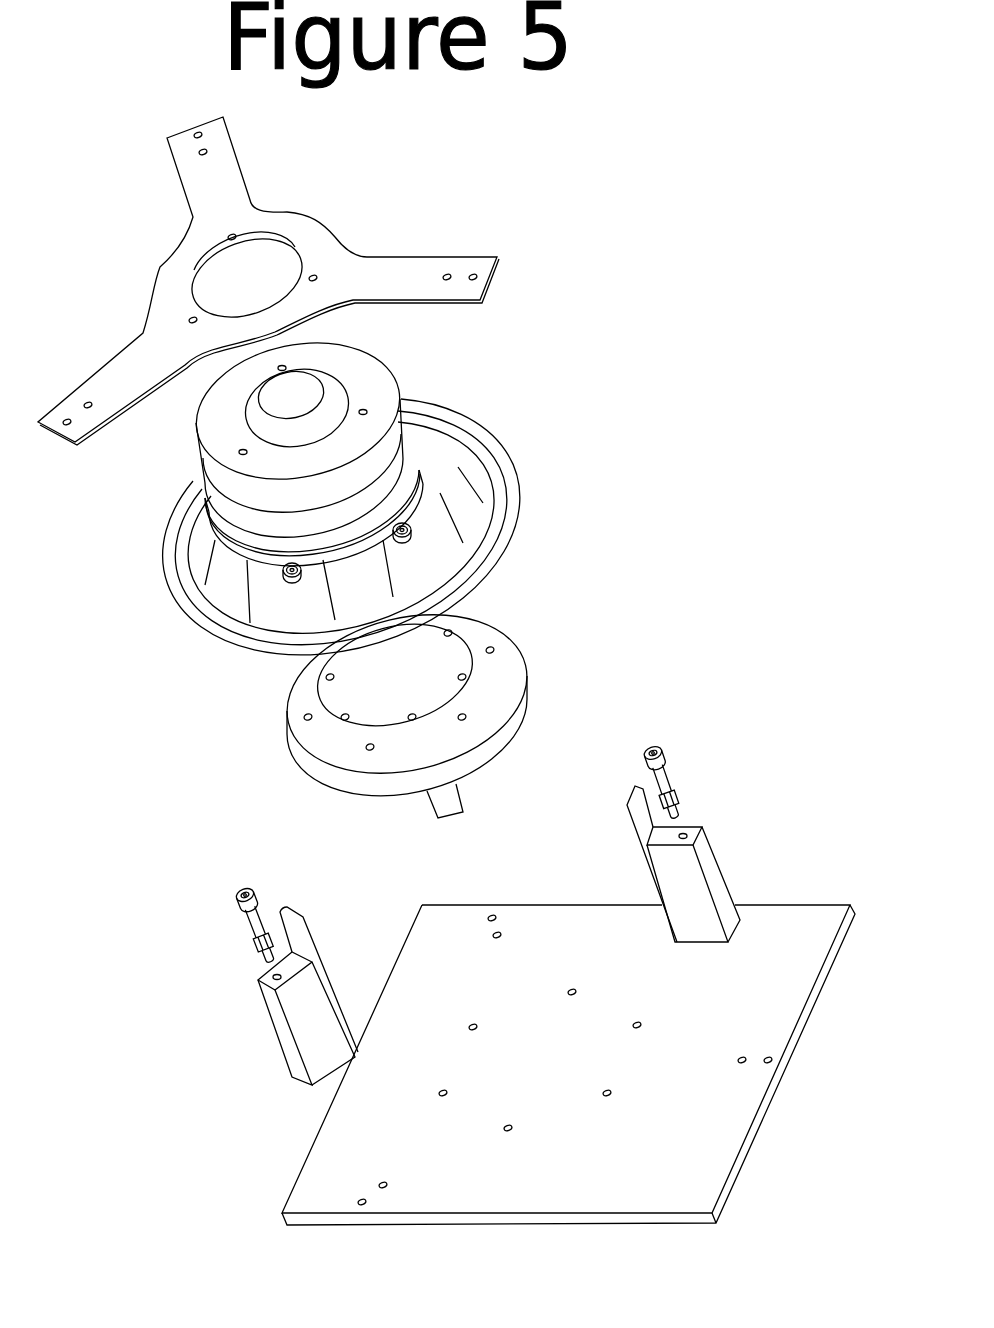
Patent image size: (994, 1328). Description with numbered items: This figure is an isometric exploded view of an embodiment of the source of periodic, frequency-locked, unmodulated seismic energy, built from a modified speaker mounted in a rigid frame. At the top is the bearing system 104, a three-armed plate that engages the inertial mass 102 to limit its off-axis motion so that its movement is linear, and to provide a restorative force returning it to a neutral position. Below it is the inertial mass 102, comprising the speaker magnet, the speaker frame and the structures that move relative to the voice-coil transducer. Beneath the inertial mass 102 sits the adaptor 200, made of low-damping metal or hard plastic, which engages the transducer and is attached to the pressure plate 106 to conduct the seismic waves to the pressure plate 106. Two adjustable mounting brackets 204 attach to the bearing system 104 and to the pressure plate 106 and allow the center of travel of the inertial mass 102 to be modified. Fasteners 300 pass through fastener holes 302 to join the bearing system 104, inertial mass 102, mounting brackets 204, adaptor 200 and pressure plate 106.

The bearing system 104 is at (322, 218).
The inertial mass 102 is at (397, 392).
The fasteners 300 is at (417, 533).
The fastener holes 302 is at (490, 650).
The adaptor 200 is at (525, 693).
The mounting brackets 204 is at (273, 1028).
The pressure plate 106 is at (568, 1065).